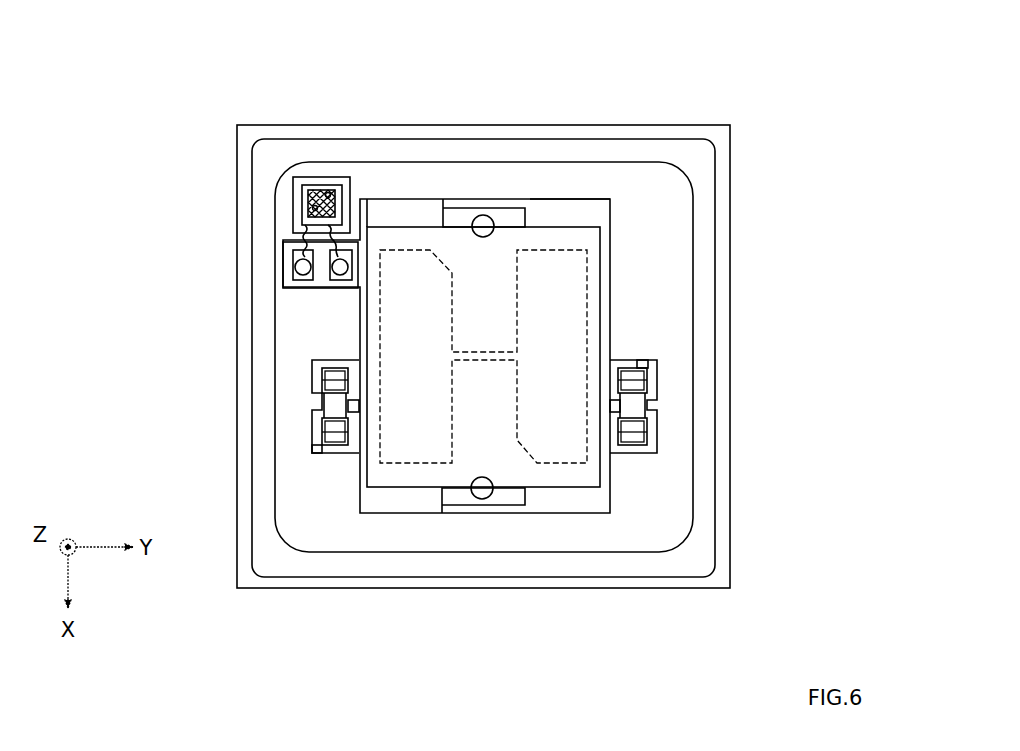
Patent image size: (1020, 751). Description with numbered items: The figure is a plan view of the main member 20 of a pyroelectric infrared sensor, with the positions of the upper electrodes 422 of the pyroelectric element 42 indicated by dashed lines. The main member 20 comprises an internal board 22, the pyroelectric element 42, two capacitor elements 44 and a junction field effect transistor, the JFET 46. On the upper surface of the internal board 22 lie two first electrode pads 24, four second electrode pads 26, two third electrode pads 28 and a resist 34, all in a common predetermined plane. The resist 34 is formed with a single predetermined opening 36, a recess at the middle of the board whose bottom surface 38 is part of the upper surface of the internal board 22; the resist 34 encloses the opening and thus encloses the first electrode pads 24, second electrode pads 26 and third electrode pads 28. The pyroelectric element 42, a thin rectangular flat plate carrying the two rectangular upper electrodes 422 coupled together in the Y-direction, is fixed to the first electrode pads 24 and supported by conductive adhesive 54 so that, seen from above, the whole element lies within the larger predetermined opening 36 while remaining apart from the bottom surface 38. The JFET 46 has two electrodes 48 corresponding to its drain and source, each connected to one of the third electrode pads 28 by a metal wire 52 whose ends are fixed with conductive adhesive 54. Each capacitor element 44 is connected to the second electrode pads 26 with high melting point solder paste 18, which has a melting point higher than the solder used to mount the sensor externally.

The main member 20 is at (143, 70).
The internal board 22 is at (240, 129).
The resist 34 is at (622, 181).
The predetermined opening 36 is at (560, 218).
The bottom surface 38 is at (585, 217).
The pyroelectric element 42 is at (602, 303).
The upper electrodes 422 is at (452, 402).
The first electrode pads 24 is at (508, 222).
The conductive adhesive 54 is at (331, 190).
The third electrode pads 28 is at (293, 260).
The junction field effect transistor (JFET) 46 is at (302, 198).
The wire 52 is at (350, 245).
The electrodes 48 is at (325, 192).
The capacitor elements 44 is at (340, 434).
The high melting point solder paste 18 is at (330, 373).
The second electrode pads 26 is at (330, 445).